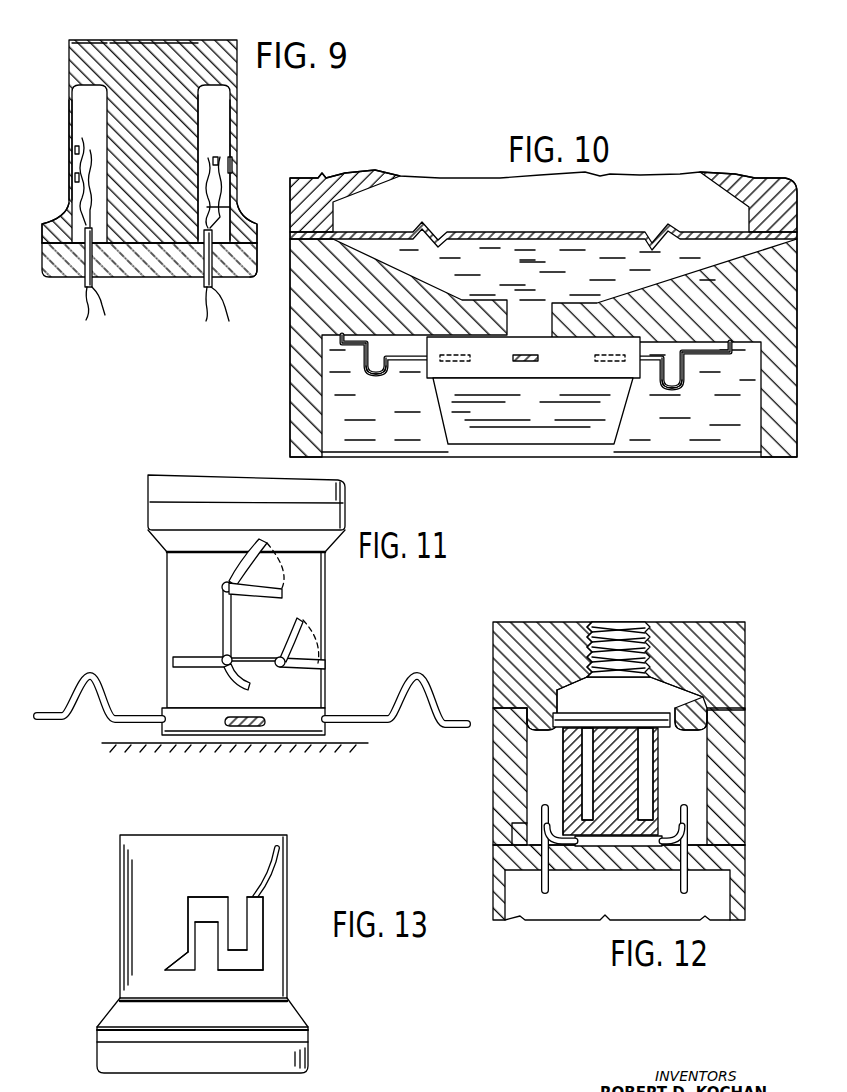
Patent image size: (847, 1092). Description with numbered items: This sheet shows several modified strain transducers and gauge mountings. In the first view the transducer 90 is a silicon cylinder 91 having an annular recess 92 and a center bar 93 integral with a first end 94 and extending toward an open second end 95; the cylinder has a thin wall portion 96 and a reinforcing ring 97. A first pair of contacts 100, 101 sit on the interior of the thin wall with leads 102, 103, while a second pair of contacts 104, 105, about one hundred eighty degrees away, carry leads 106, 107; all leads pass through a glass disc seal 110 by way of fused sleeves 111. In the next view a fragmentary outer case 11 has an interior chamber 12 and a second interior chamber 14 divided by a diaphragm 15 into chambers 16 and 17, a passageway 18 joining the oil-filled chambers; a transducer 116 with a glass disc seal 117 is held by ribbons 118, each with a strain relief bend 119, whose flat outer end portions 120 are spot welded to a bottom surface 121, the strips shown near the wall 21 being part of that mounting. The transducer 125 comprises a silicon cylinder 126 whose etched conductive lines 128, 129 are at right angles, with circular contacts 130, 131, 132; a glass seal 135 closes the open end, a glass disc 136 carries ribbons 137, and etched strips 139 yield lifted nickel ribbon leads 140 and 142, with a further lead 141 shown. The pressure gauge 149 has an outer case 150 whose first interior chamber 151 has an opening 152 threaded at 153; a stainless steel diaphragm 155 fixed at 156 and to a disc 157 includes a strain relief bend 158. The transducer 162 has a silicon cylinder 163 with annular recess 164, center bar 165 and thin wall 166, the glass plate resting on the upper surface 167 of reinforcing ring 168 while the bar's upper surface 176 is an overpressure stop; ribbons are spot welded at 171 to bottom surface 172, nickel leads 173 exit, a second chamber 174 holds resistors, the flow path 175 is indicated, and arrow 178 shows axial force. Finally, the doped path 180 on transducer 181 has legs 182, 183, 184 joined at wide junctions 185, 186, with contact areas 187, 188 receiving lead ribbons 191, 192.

In FIG. 10, the outer case 11 is at (767, 462).
In FIG. 10, the interior chamber 12 is at (713, 446).
In FIG. 10, the second interior chamber 14 is at (387, 193).
In FIG. 10, the diaphragm 15 is at (480, 232).
In FIG. 10, the third chamber 16 is at (653, 275).
In FIG. 12, the third chamber 16 is at (540, 756).
In FIG. 10, the fourth chamber 17 is at (577, 216).
In FIG. 10, the passageway 18 is at (551, 330).
In FIG. 10, the connector strip 21 is at (680, 343).
In FIG. 9, the transducer 90 is at (223, 78).
In FIG. 9, the silicon cylinder 91 is at (100, 53).
In FIG. 9, the annular recess 92 is at (82, 98).
In FIG. 9, the center bar 93 is at (193, 125).
In FIG. 9, the first end 94 is at (168, 67).
In FIG. 9, the second end 95 is at (168, 243).
In FIG. 9, the thin wall portion 96 is at (72, 122).
In FIG. 9, the reinforcing ring 97 is at (43, 228).
In FIG. 9, the contact 100 is at (77, 148).
In FIG. 9, the contact 101 is at (76, 182).
In FIG. 9, the lead 102 is at (83, 217).
In FIG. 9, the lead 103 is at (87, 200).
In FIG. 9, the contact 104 is at (220, 157).
In FIG. 9, the contact 105 is at (232, 170).
In FIG. 9, the lead 106 is at (208, 206).
In FIG. 9, the lead 107 is at (220, 200).
In FIG. 9, the glass disc seal 110 is at (245, 282).
In FIG. 9, the sleeve 111 is at (100, 287).
In FIG. 10, the transducer 116 is at (615, 407).
In FIG. 10, the glass disc seal 117 is at (477, 378).
In FIG. 10, the ribbon 118 is at (385, 374).
In FIG. 10, the strain relief bend 119 is at (368, 372).
In FIG. 10, the outer end portion 120 is at (345, 335).
In FIG. 10, the bottom surface 121 is at (405, 342).
In FIG. 11, the transducer 125 is at (336, 620).
In FIG. 11, the silicon cylinder 126 is at (315, 572).
In FIG. 11, the line 128 is at (223, 617).
In FIG. 11, the line 129 is at (253, 657).
In FIG. 11, the contact point 130 is at (222, 585).
In FIG. 11, the contact point 131 is at (220, 668).
In FIG. 11, the contact point 132 is at (280, 672).
In FIG. 11, the glass seal 135 is at (153, 487).
In FIG. 11, the glass disc 136 is at (328, 713).
In FIG. 12, the glass disc 136 is at (622, 846).
In FIG. 11, the ribbon 137 is at (107, 708).
In FIG. 12, the ribbon 137 is at (539, 812).
In FIG. 11, the strip 139 is at (261, 594).
In FIG. 11, the ribbon lead 140 is at (253, 550).
In FIG. 11, the arm 141 is at (250, 688).
In FIG. 11, the ribbon lead 142 is at (290, 633).
In FIG. 12, the pressure gauge 149 is at (750, 665).
In FIG. 12, the outer case 150 is at (493, 632).
In FIG. 12, the first interior chamber 151 is at (530, 688).
In FIG. 12, the opening 152 is at (608, 630).
In FIG. 12, the threads 153 is at (590, 622).
In FIG. 12, the stainless steel diaphragm 155 is at (530, 717).
In FIG. 12, the attachment 156 is at (636, 689).
In FIG. 12, the stainless steel disc 157 is at (626, 682).
In FIG. 12, the strain relief bend 158 is at (707, 727).
In FIG. 12, the transducer 162 is at (684, 782).
In FIG. 12, the silicon cylinder 163 is at (605, 835).
In FIG. 12, the annular recess 164 is at (610, 781).
In FIG. 12, the center bar 165 is at (632, 748).
In FIG. 12, the thin wall portion 166 is at (656, 770).
In FIG. 12, the upper surface 167 is at (573, 727).
In FIG. 12, the reinforcing ring 168 is at (573, 714).
In FIG. 12, the spot weld 171 is at (705, 852).
In FIG. 12, the bottom surface 172 is at (537, 838).
In FIG. 12, the nickel lead 173 is at (663, 803).
In FIG. 12, the second interior chamber 174 is at (513, 885).
In FIG. 12, the flow path 175 is at (614, 666).
In FIG. 12, the upper surface 176 is at (640, 712).
In FIG. 12, the arrow 178 is at (615, 813).
In FIG. 13, the current conducting path 180 is at (209, 895).
In FIG. 13, the transducer 181 is at (233, 940).
In FIG. 13, the leg 182 is at (188, 940).
In FIG. 13, the leg 183 is at (208, 972).
In FIG. 13, the leg 184 is at (247, 953).
In FIG. 13, the junction area 185 is at (193, 910).
In FIG. 13, the junction 186 is at (240, 973).
In FIG. 13, the contact area 187 is at (186, 970).
In FIG. 13, the contact area 188 is at (249, 921).
In FIG. 13, the lead ribbon 191 is at (165, 960).
In FIG. 13, the lead ribbon 192 is at (278, 860).